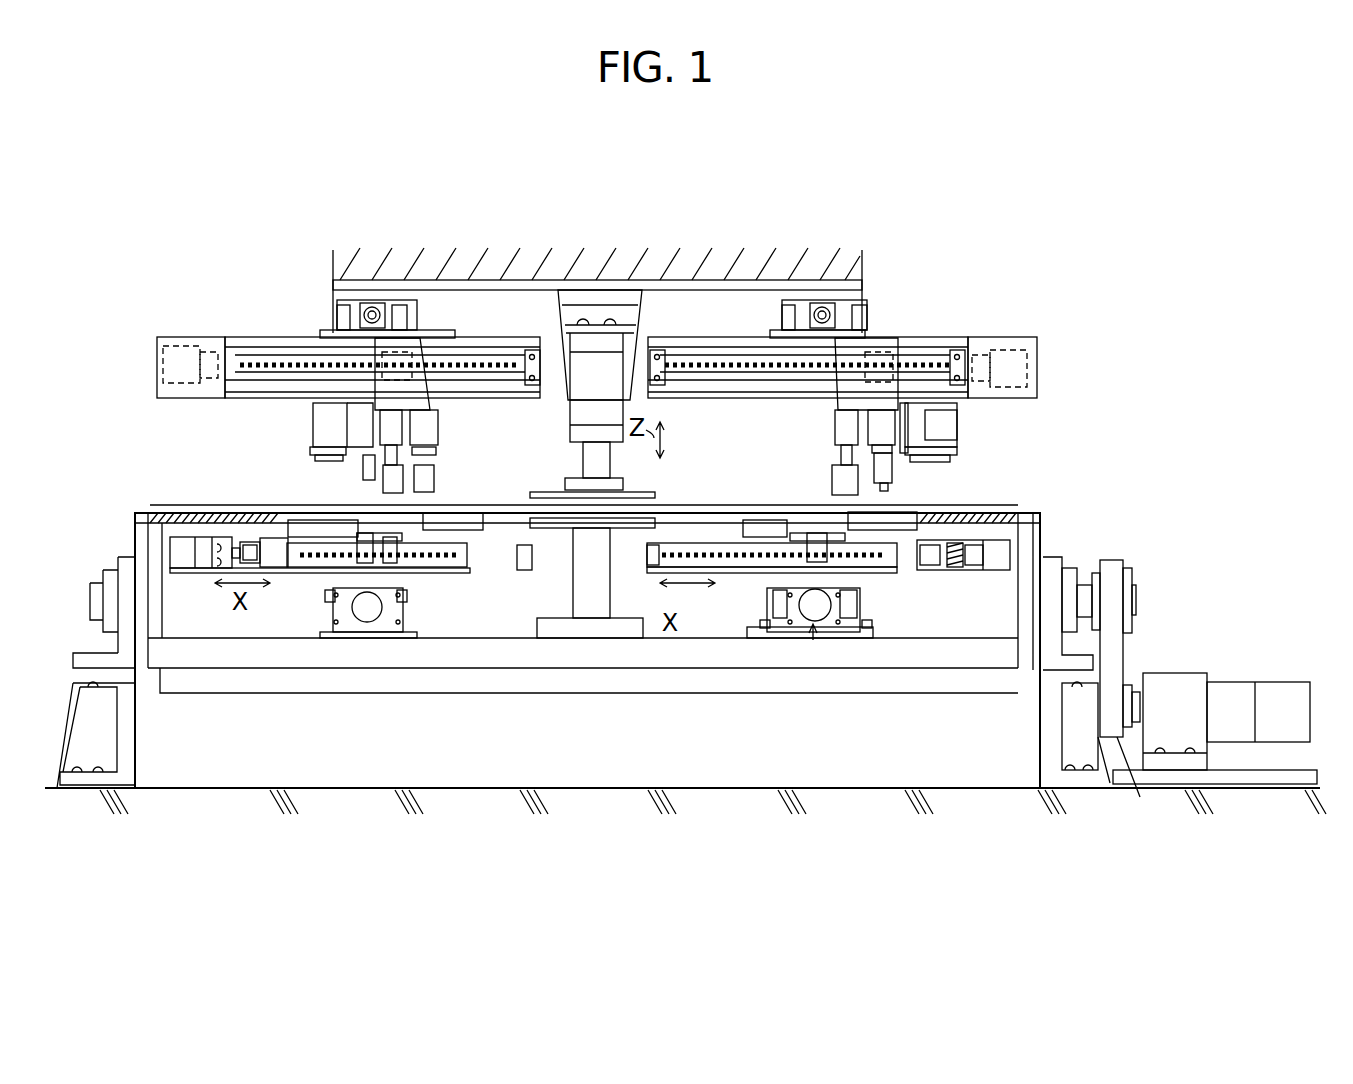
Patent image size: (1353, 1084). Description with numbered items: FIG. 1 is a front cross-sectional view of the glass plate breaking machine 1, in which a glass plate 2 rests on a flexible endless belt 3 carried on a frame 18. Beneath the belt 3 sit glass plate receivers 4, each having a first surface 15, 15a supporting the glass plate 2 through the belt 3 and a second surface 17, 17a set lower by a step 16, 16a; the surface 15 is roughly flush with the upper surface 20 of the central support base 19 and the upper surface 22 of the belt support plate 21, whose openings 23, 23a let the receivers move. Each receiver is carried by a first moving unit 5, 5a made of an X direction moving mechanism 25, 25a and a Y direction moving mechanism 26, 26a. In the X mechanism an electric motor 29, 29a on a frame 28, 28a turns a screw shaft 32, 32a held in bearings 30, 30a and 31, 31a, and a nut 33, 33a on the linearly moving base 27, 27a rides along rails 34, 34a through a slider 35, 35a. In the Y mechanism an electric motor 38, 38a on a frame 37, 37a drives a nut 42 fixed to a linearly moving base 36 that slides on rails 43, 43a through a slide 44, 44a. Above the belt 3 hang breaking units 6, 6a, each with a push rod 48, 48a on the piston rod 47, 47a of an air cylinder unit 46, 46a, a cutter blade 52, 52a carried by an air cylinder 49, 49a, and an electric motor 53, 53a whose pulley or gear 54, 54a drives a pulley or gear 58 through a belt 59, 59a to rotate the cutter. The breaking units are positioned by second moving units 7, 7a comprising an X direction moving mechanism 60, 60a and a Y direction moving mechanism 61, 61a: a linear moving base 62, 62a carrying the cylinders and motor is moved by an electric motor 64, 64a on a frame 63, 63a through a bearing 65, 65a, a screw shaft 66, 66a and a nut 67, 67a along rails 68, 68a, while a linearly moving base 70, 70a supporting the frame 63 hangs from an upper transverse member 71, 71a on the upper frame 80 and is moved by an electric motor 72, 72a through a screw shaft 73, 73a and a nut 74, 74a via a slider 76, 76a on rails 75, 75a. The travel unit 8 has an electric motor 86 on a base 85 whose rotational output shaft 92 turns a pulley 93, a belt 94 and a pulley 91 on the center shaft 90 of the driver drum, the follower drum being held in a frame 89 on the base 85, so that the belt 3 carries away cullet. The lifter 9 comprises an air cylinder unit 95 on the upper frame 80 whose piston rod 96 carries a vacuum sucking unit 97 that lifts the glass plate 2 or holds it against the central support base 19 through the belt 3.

The glass plate breaking machine 1 is at (967, 256).
The glass plate 2 is at (705, 522).
The flexible endless belt 3 is at (1020, 520).
The glass plate receiver 4 is at (880, 560).
The first moving unit 5 is at (1062, 540).
The first moving unit 5a is at (178, 542).
The breaking unit 6 is at (826, 432).
The breaking unit 6a is at (435, 428).
The second moving unit 7 is at (979, 324).
The second moving unit 7a is at (259, 326).
The travel unit 8 is at (1172, 620).
The lifter 9 is at (609, 377).
The first surface 15 is at (790, 510).
The first surface 15a is at (285, 520).
The step 16 is at (788, 522).
The step 16a is at (323, 530).
The second surface 17 is at (865, 522).
The second surface 17a is at (430, 520).
The frame 18 is at (610, 660).
The central support base 19 is at (600, 560).
The upper surface 20 is at (604, 530).
The belt support plate 21 is at (1060, 510).
The upper surface 22 is at (1000, 515).
The opening 23 is at (965, 510).
The opening 23a is at (285, 503).
The X direction moving mechanism 25 is at (690, 537).
The X direction moving mechanism 25a is at (211, 528).
The Y direction moving mechanism 26 is at (813, 645).
The Y direction moving mechanism 26a is at (345, 672).
The linearly moving base 27 is at (805, 548).
The linearly moving base 27a is at (430, 590).
The frame 28 is at (720, 575).
The frame 28a is at (278, 575).
The electric motor 29 is at (985, 567).
The electric motor 29a is at (207, 568).
The bearing 30 is at (670, 575).
The bearing 30a is at (575, 628).
The bearing 31 is at (952, 567).
The bearing 31a is at (273, 540).
The screw shaft 32 is at (698, 500).
The screw shaft 32a is at (490, 545).
The nut 33 is at (848, 600).
The nut 33a is at (395, 560).
The pair of rails 34 is at (728, 500).
The pair of rails 34a is at (528, 545).
The slider 35 is at (812, 560).
The slider 35a is at (355, 568).
The linearly moving base 36 is at (838, 640).
The frame 37 is at (785, 638).
The frame 37a is at (335, 642).
The electric motor 38 is at (808, 640).
The electric motor 38a is at (367, 615).
The nut 42 is at (826, 640).
The pair of rails 43 is at (762, 628).
The pair of rails 43a is at (330, 600).
The slide 44 is at (792, 636).
The slide 44a is at (330, 598).
The air cylinder unit 46 is at (845, 415).
The air cylinder unit 46a is at (400, 420).
The piston rod 47 is at (840, 458).
The piston rod 47a is at (400, 458).
The push rod 48 is at (835, 482).
The push rod 48a is at (434, 478).
The air cylinder 49 is at (900, 350).
The air cylinder 49a is at (430, 380).
The cutter blade 52 is at (890, 490).
The cutter blade 52a is at (403, 490).
The electric motor 53 is at (950, 430).
The electric motor 53a is at (315, 438).
The pulley or gear 54 is at (930, 500).
The pulley or gear 54a is at (310, 458).
The pulley or gear 58 is at (893, 470).
The belt 59 is at (957, 455).
The belt 59a is at (365, 478).
The X direction moving mechanism 60 is at (945, 337).
The X direction moving mechanism 60a is at (210, 327).
The Y direction moving mechanism 61 is at (782, 300).
The Y direction moving mechanism 61a is at (345, 300).
The linear moving base 62 is at (865, 333).
The linear moving base 62a is at (436, 333).
The frame 63 is at (1010, 337).
The frame 63a is at (507, 341).
The electric motor 64 is at (1035, 340).
The electric motor 64a is at (158, 367).
The bearing 65 is at (660, 350).
The bearing 65a is at (238, 375).
The screw shaft 66 is at (700, 368).
The screw shaft 66a is at (268, 370).
The nut 67 is at (880, 345).
The nut 67a is at (401, 374).
The pair of rails 68 is at (725, 380).
The pair of rails 68a is at (255, 372).
The linearly moving base 70 is at (862, 322).
The linearly moving base 70a is at (340, 332).
The upper transverse member 71 is at (822, 303).
The upper transverse member 71a is at (370, 303).
The electric motor 72 is at (838, 295).
The electric motor 72a is at (408, 297).
The screw shaft 73 is at (830, 300).
The screw shaft 73a is at (395, 300).
The nut 74 is at (815, 303).
The nut 74a is at (376, 303).
The pair of rails 75 is at (790, 305).
The pair of rails 75a is at (348, 303).
The slider 76 is at (795, 315).
The slider 76a is at (343, 310).
The upper frame 80 is at (580, 365).
The base 85 is at (412, 786).
The electric motor 86 is at (1220, 684).
The frame 89 is at (118, 560).
The center shaft 90 is at (1136, 592).
The pulley 91 is at (1125, 572).
The rotational output shaft 92 is at (1170, 674).
The pulley 93 is at (1136, 692).
The belt 94 is at (1126, 790).
The air cylinder unit 95 is at (575, 362).
The piston rod 96 is at (587, 460).
The vacuum sucking unit 97 is at (560, 492).